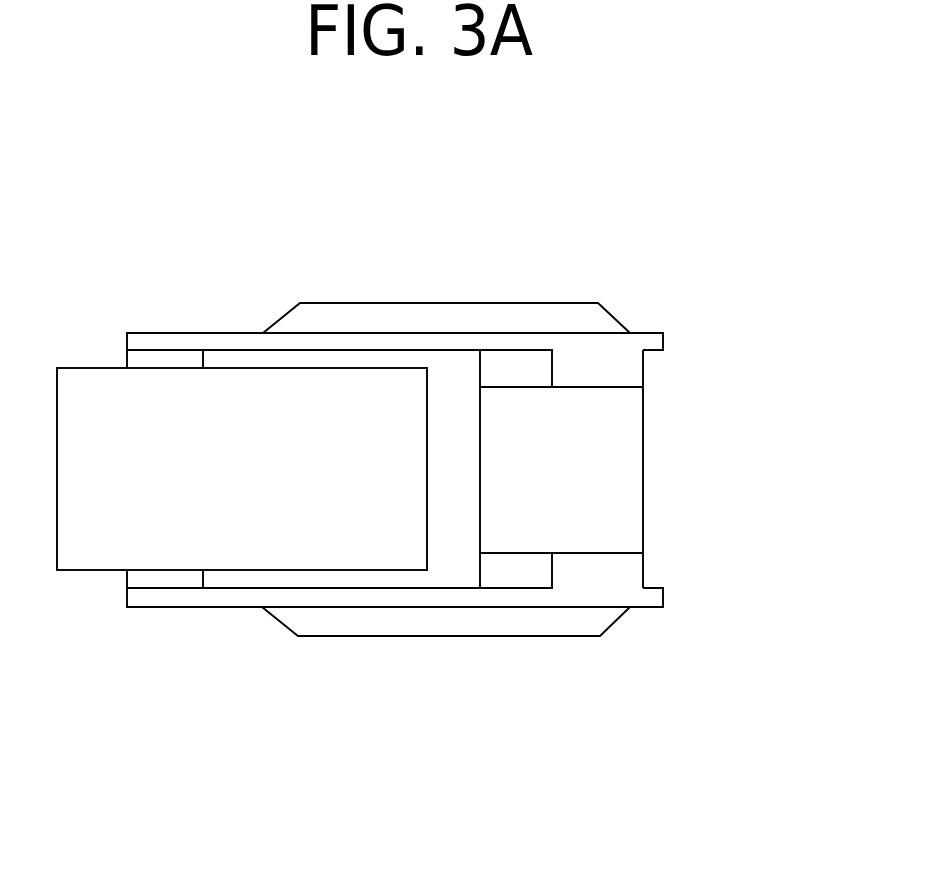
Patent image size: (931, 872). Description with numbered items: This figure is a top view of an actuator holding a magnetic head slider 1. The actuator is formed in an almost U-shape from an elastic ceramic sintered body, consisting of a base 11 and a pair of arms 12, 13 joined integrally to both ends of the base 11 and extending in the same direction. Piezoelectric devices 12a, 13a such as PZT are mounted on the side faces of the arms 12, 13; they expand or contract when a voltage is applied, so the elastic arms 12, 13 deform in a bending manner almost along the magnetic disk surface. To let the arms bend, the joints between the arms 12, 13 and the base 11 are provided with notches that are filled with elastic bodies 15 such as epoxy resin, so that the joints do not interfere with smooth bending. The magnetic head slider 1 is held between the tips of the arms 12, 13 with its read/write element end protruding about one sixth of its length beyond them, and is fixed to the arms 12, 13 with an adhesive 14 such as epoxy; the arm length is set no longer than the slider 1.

The magnetic head slider 1 is at (75, 572).
The base 11 is at (645, 448).
The arm 12 is at (191, 333).
The arm 13 is at (212, 607).
The piezoelectric device 12a is at (540, 303).
The piezoelectric device 13a is at (531, 636).
The adhesive 14 is at (126, 366).
The elastic body 15 is at (480, 368).